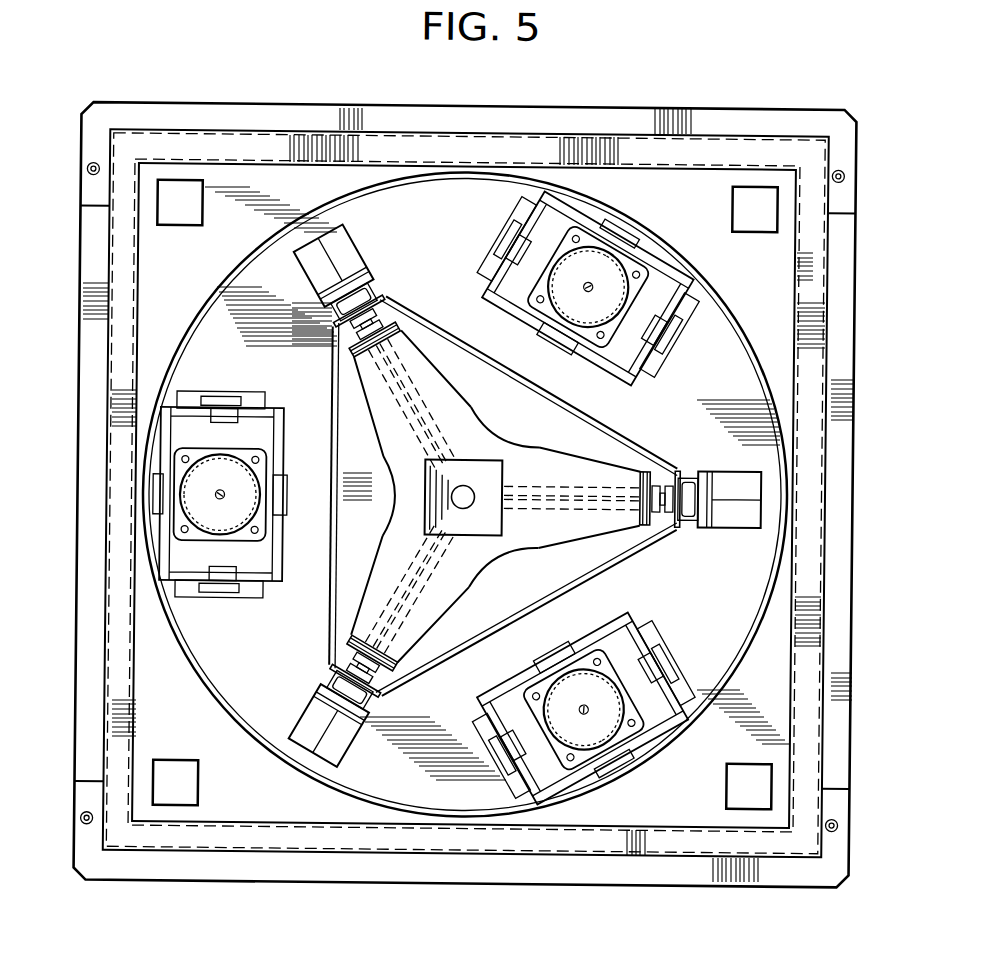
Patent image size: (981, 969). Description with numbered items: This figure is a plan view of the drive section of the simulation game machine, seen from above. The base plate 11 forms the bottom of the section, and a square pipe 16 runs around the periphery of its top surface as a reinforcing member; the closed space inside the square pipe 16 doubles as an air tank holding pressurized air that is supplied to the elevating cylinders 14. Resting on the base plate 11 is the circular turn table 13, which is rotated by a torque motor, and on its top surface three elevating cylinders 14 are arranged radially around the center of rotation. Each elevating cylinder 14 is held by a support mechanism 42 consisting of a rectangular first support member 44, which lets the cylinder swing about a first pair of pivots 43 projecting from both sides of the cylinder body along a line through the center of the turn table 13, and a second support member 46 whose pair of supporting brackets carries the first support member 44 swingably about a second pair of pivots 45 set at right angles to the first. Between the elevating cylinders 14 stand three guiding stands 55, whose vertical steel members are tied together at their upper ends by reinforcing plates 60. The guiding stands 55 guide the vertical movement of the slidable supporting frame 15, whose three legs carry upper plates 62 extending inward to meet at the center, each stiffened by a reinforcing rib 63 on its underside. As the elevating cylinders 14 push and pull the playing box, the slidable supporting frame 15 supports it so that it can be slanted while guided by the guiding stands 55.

The base plate 11 is at (565, 884).
The turn table 13 is at (217, 318).
The elevating cylinder 14 is at (222, 545).
The slidable supporting frame 15 is at (358, 418).
The square pipe 16 is at (840, 562).
The support mechanism 42 is at (270, 592).
The first pair of pivots 43 is at (548, 348).
The first support member 44 is at (592, 247).
The second pair of pivots 45 is at (498, 232).
The second support member 46 is at (697, 312).
The guiding stand 55 is at (375, 257).
The reinforcing plate 60 is at (333, 490).
The upper plate 62 is at (460, 407).
The reinforcing rib 63 is at (436, 566).